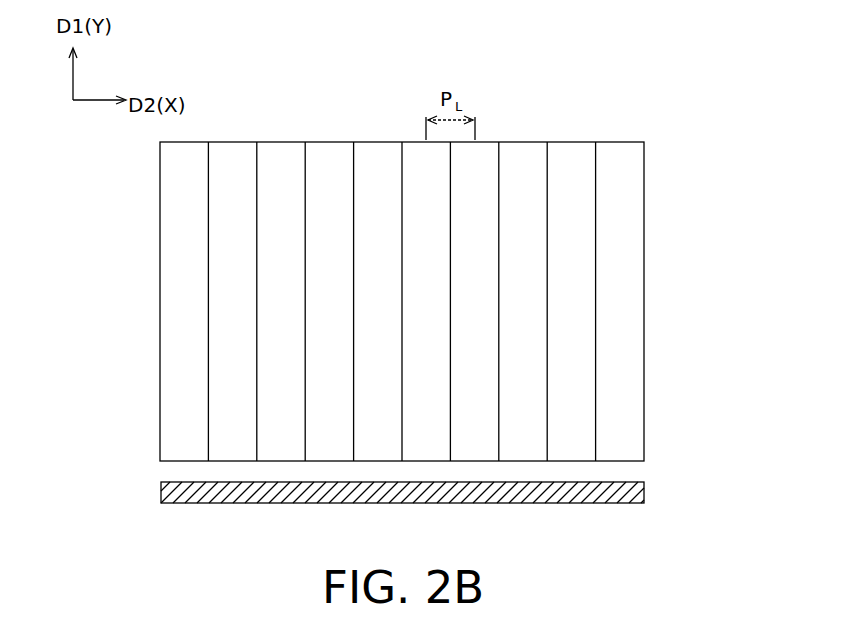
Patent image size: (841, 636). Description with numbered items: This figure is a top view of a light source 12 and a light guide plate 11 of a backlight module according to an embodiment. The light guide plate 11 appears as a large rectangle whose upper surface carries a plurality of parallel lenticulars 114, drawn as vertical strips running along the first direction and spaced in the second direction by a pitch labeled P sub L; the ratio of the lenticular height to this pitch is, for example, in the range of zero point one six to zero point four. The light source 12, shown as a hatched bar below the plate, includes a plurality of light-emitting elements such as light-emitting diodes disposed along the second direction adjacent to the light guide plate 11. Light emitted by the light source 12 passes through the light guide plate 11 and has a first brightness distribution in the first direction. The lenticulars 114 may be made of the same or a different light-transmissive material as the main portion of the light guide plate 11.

The light guide plate 11 is at (666, 287).
The lenticulars 114 is at (622, 157).
The light source 12 is at (636, 491).